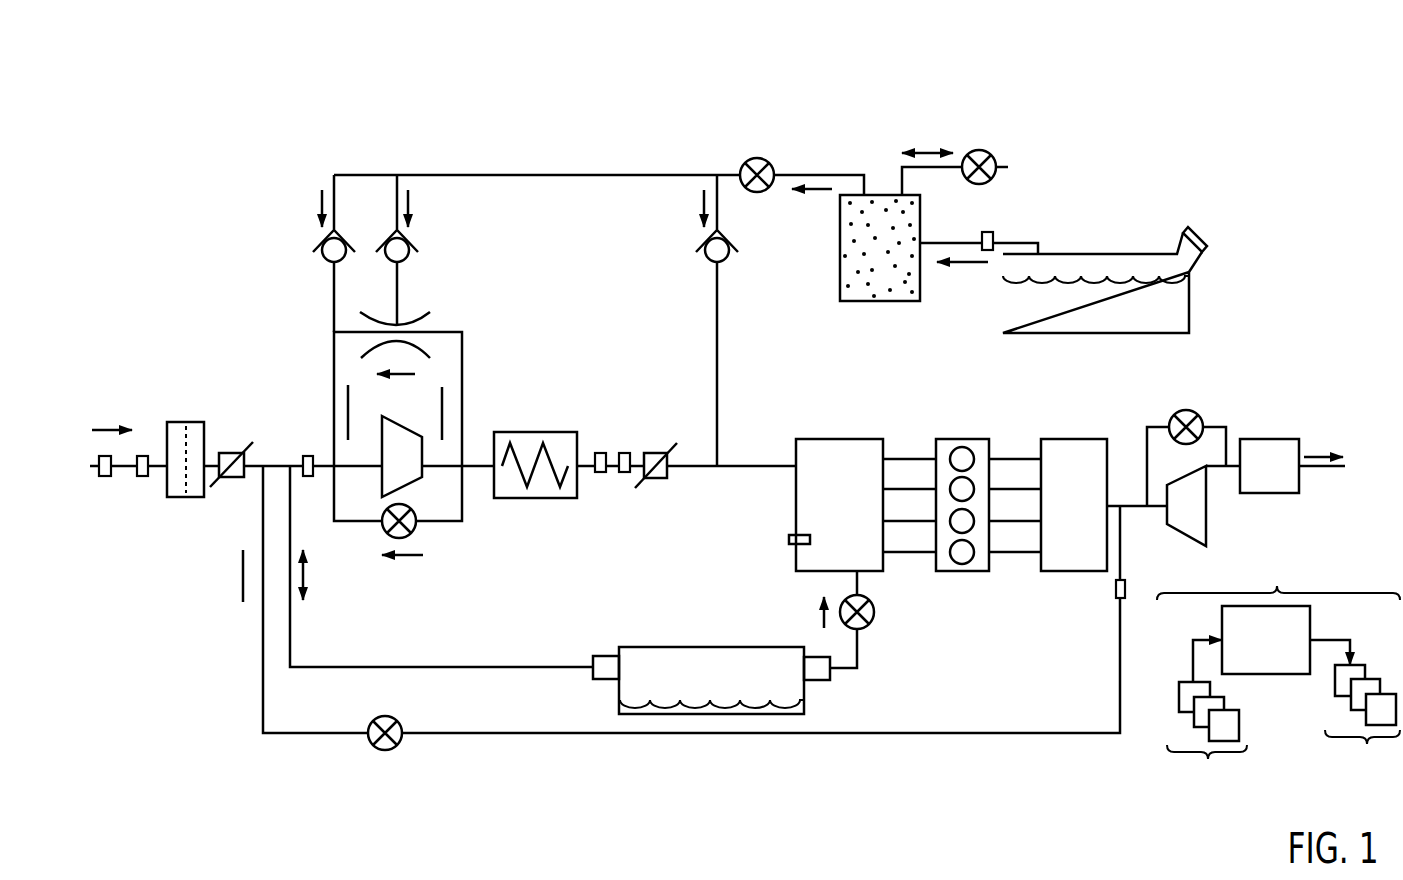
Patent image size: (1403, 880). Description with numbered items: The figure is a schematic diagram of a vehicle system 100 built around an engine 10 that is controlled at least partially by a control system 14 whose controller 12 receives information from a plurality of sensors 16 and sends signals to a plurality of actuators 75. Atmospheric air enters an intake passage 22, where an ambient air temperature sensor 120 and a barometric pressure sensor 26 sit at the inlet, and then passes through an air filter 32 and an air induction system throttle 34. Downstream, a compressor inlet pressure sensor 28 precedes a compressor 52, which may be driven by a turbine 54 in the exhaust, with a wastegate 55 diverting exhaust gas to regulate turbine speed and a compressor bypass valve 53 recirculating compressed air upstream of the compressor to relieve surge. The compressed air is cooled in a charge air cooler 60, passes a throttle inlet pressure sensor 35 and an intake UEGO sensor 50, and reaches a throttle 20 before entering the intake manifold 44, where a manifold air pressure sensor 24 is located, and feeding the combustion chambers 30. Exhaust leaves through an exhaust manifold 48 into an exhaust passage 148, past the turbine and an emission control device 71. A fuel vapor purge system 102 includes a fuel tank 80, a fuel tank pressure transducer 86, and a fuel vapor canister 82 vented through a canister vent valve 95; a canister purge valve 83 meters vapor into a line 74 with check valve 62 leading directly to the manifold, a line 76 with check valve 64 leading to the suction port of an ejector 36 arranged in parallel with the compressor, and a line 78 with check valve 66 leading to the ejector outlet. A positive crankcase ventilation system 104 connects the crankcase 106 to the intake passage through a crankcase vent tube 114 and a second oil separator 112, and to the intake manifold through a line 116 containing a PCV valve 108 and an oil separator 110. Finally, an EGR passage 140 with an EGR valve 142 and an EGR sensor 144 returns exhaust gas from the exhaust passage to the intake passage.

The vehicle system 100 is at (178, 125).
The fuel vapor purge system 102 is at (1105, 180).
The positive crankcase ventilation system 104 is at (688, 607).
The engine 10 is at (989, 440).
The controller 12 is at (1255, 650).
The control system 14 is at (1278, 578).
The sensors 16 is at (1207, 733).
The actuators 75 is at (1362, 715).
The throttle 20 is at (653, 453).
The intake passage 22 is at (752, 463).
The manifold air pressure sensor 24 is at (789, 537).
The barometric pressure sensor 26 is at (142, 477).
The compressor inlet pressure sensor 28 is at (307, 456).
The combustion chambers 30 is at (961, 447).
The air filter 32 is at (184, 422).
The air induction system throttle 34 is at (222, 452).
The throttle inlet pressure sensor 35 is at (604, 472).
The ejector 36 is at (458, 316).
The intake manifold 44 is at (828, 516).
The exhaust manifold 48 is at (1062, 516).
The intake UEGO sensor 50 is at (625, 453).
The compressor 52 is at (390, 476).
The compressor bypass valve 53 is at (411, 534).
The turbine 54 is at (1176, 515).
The wastegate 55 is at (1199, 415).
The charge air cooler 60 is at (530, 432).
The check valve 62 is at (708, 260).
The check valve 64 is at (410, 242).
The check valve 66 is at (320, 242).
The emission control device 71 is at (1258, 476).
The line 74 is at (717, 390).
The line 76 is at (397, 296).
The line 78 is at (334, 304).
The fuel tank 80 is at (1003, 292).
The fuel vapor canister 82 is at (840, 243).
The canister purge valve 83 is at (770, 163).
The fuel tank pressure transducer 86 is at (989, 232).
The canister vent valve 95 is at (978, 151).
The crankcase 106 is at (696, 688).
The PCV valve 108 is at (873, 620).
The oil separator 110 is at (825, 680).
The second oil separator 112 is at (599, 680).
The crankcase vent tube 114 is at (362, 665).
The line 116 is at (860, 660).
The ambient air temperature sensor 120 is at (105, 477).
The EGR passage 140 is at (972, 733).
The EGR valve 142 is at (400, 741).
The EGR sensor 144 is at (1124, 580).
The exhaust passage 148 is at (1128, 505).